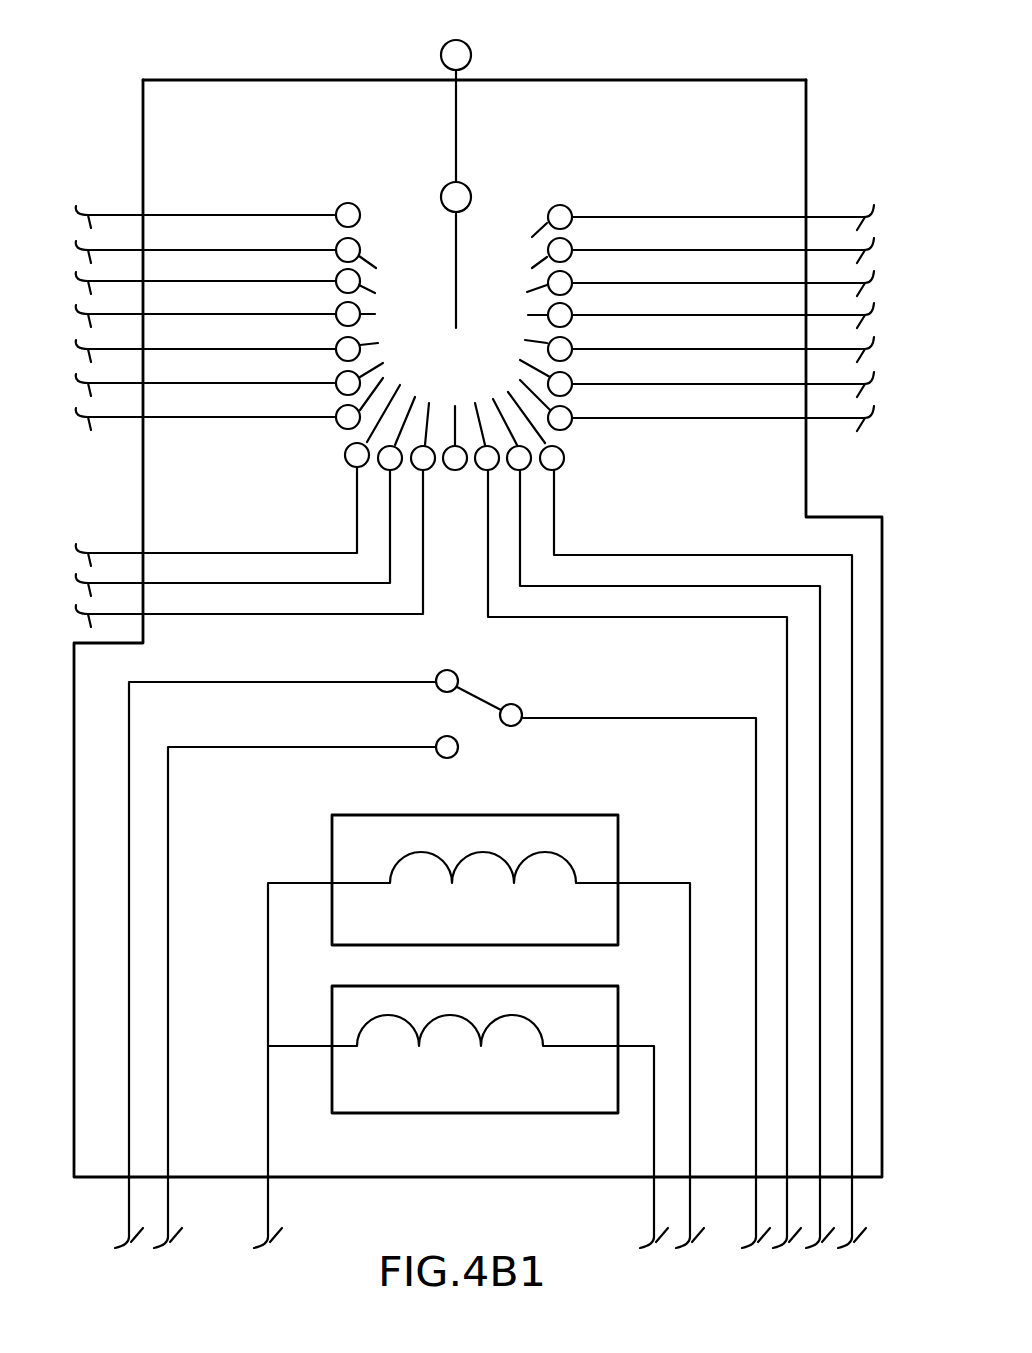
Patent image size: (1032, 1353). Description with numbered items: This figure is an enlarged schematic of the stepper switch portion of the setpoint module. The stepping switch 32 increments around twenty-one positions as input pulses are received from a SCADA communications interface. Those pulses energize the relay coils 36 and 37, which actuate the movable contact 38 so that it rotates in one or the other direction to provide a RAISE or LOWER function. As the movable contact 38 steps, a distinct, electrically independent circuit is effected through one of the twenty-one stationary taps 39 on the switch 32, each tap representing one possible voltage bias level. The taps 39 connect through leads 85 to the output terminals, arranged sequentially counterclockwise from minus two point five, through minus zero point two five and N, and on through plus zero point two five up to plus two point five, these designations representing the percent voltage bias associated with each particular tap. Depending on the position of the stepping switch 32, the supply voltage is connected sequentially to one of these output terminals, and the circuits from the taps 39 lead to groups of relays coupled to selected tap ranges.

The stepping switch 32 is at (540, 52).
The movable contact 38 is at (477, 184).
The stationary taps 39 is at (360, 306).
The leads 85 is at (842, 217).
The relay coil 36 is at (485, 855).
The relay coil 37 is at (455, 1017).